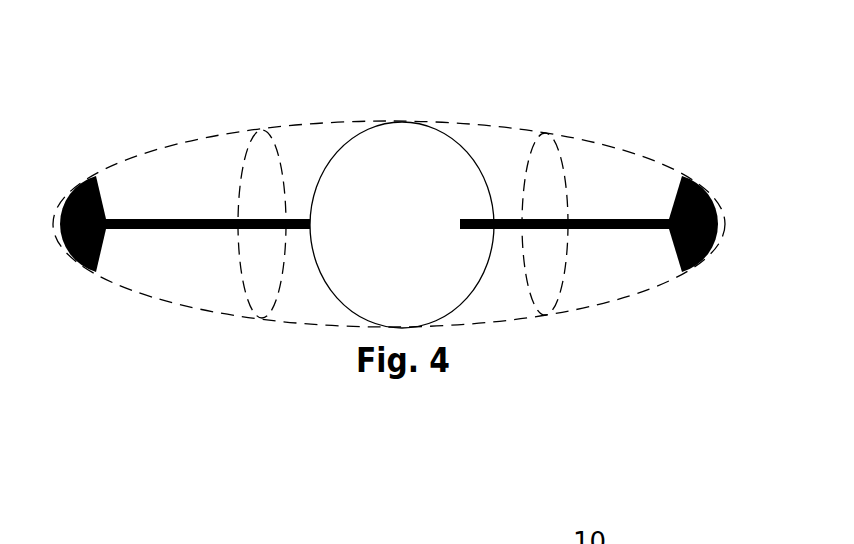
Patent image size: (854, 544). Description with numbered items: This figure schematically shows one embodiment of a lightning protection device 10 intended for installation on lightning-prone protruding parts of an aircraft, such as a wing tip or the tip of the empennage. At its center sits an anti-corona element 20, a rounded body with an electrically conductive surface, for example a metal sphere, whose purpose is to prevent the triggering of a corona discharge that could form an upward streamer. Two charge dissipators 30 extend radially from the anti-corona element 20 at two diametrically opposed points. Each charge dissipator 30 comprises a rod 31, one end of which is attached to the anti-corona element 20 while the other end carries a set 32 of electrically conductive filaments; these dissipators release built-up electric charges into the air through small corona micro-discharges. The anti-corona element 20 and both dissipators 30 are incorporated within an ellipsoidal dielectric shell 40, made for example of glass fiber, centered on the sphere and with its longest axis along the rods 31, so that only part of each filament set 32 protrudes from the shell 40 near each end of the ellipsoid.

The lightning protection device 10 is at (285, 90).
The anti-corona element 20 is at (398, 147).
The charge dissipator 30 is at (133, 210).
The rod 31 is at (196, 231).
The set of electrically conductive filaments 32 is at (84, 172).
The dielectric shell 40 is at (610, 143).